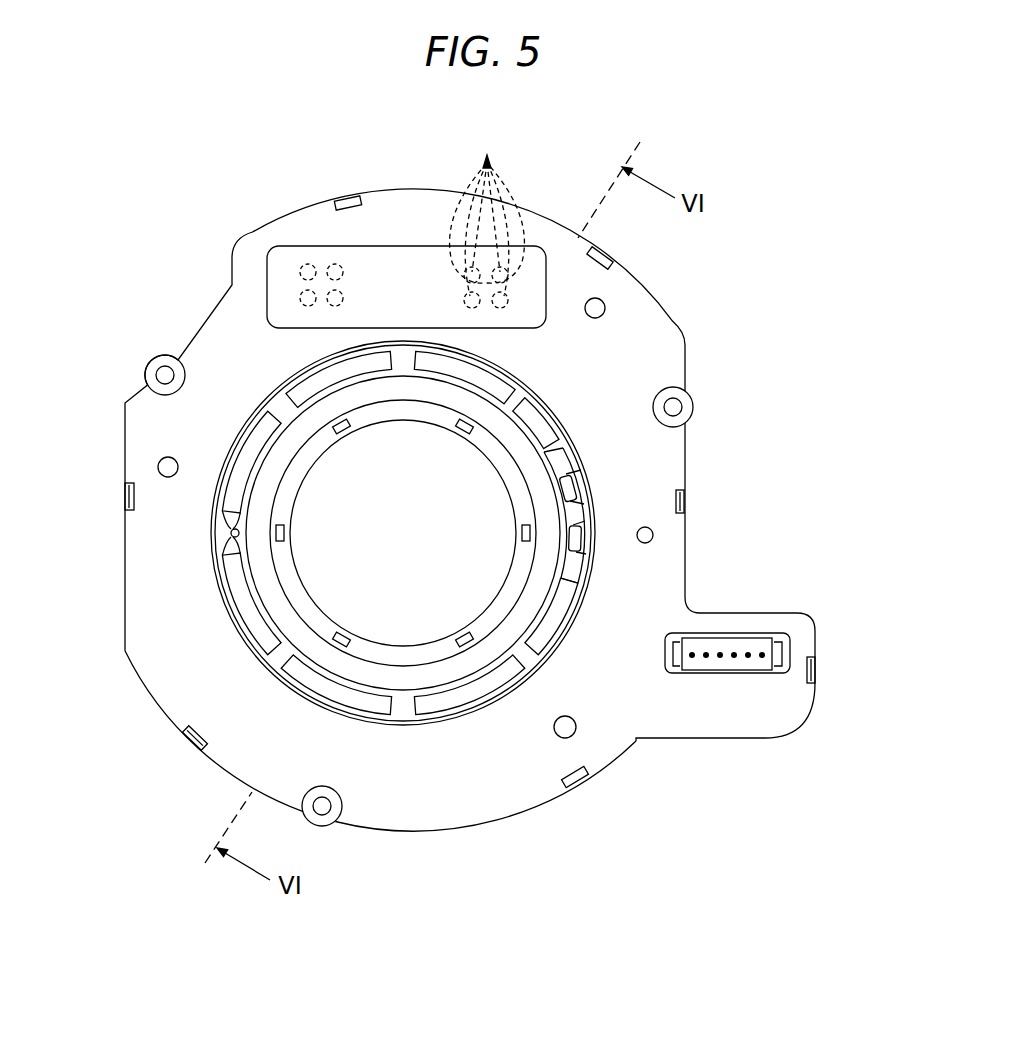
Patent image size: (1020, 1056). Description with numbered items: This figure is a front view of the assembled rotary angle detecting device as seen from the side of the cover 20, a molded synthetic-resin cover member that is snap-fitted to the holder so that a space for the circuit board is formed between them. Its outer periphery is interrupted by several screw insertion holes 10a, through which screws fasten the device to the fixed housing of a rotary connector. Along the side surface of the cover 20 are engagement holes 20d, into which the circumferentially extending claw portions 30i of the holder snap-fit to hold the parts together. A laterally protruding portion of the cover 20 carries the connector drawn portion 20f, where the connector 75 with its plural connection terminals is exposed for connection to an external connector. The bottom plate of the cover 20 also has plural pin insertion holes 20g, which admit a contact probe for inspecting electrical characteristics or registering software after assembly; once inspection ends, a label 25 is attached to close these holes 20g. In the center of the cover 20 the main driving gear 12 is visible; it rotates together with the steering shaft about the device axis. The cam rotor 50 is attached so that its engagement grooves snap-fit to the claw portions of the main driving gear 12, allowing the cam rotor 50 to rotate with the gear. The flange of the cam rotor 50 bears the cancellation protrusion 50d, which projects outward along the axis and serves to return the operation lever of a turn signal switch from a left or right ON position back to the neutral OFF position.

The second cover member 20 is at (120, 551).
The connector drawn portion 20f is at (668, 655).
The pin insertion holes 20g is at (487, 156).
The engagement holes 20d is at (183, 738).
The screw insertion hole 10a is at (150, 370).
The label 25 is at (278, 258).
The cam rotor 50 is at (232, 624).
The cancellation protrusion 50d is at (588, 489).
The main driving gear 12 is at (322, 602).
The connector 75 is at (743, 642).
The claw portions 30i is at (192, 753).